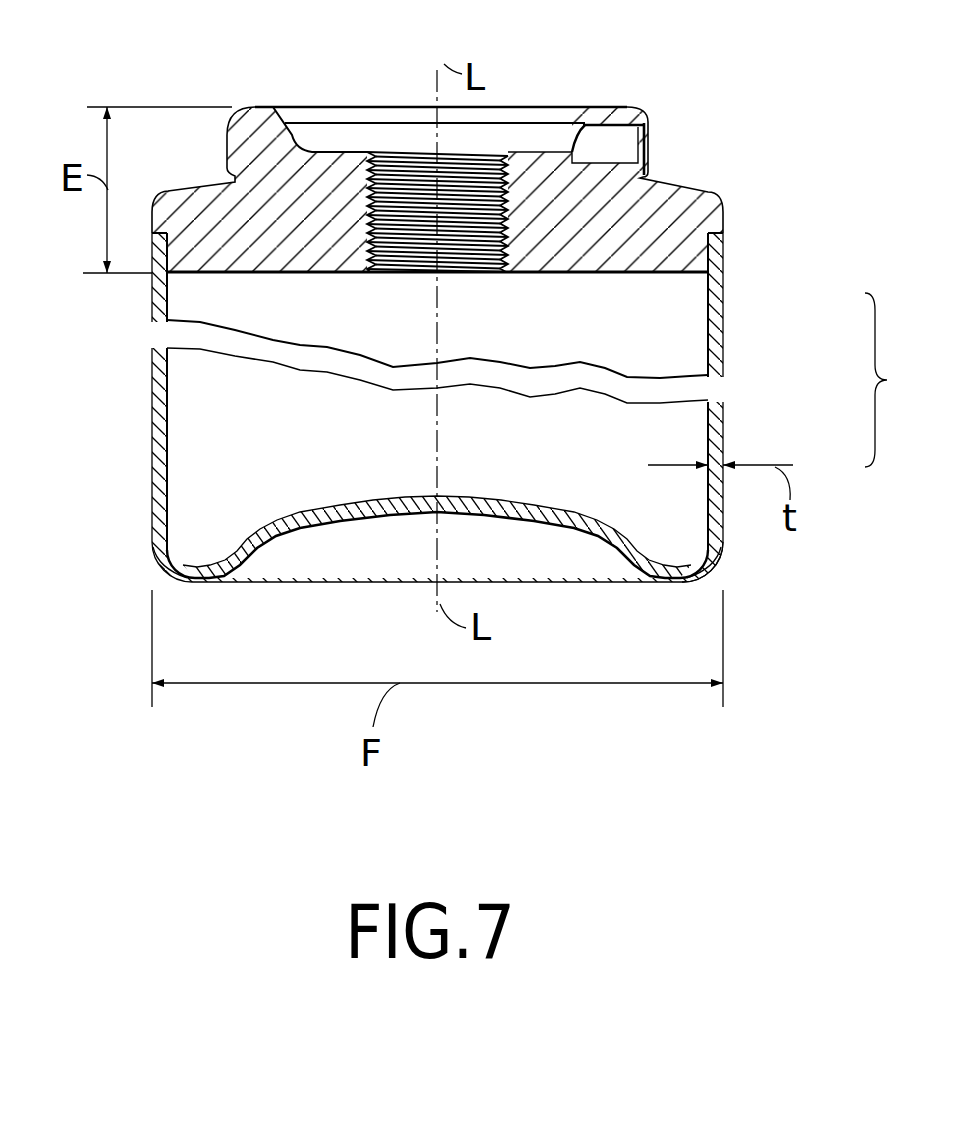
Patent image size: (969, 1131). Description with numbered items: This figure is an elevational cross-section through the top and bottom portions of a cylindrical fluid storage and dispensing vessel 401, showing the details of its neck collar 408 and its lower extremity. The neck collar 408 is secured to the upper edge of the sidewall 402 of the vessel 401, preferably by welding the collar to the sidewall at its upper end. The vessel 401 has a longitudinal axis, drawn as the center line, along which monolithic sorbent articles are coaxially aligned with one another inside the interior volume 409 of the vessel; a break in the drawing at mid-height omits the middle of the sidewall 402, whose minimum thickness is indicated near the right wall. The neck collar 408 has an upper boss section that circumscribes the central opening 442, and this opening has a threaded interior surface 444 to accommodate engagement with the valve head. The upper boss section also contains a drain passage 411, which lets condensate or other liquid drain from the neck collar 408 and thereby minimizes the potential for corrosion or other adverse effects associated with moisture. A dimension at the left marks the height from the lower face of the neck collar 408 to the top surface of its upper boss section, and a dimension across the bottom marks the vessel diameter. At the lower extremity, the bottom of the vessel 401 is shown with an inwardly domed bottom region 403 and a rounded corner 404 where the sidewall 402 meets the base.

The vessel 401 is at (438, 450).
The sidewall 402 is at (727, 308).
The domed bottom 403 is at (407, 515).
The bottom corner 404 is at (677, 583).
The neck collar 408 is at (479, 141).
The interior volume 409 is at (643, 433).
The drain passage 411 is at (627, 150).
The central opening 442 is at (483, 195).
The threaded interior surface 444 is at (393, 195).